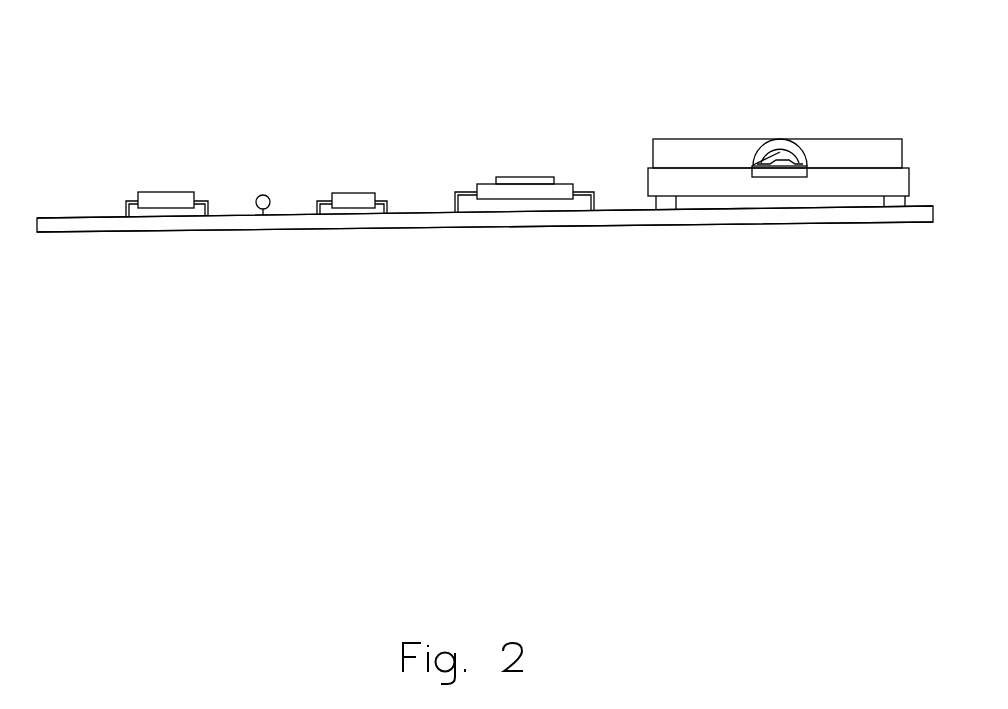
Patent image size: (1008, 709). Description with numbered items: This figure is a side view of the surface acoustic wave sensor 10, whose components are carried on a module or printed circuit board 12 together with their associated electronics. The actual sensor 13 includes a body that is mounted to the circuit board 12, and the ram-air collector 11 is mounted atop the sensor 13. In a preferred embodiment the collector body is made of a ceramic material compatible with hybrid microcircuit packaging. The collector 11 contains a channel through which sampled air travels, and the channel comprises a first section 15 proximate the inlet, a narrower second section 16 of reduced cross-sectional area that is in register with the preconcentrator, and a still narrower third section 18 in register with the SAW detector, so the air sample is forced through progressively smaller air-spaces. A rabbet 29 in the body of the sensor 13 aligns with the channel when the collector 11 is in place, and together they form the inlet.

The surface acoustic wave sensor 10 is at (519, 315).
The ram-air collector 11 is at (705, 150).
The circuit board 12 is at (291, 220).
The sensor 13 is at (868, 180).
The first section 15 is at (807, 165).
The second section 16 is at (753, 165).
The third section 18 is at (775, 167).
The rabbet 29 is at (797, 177).